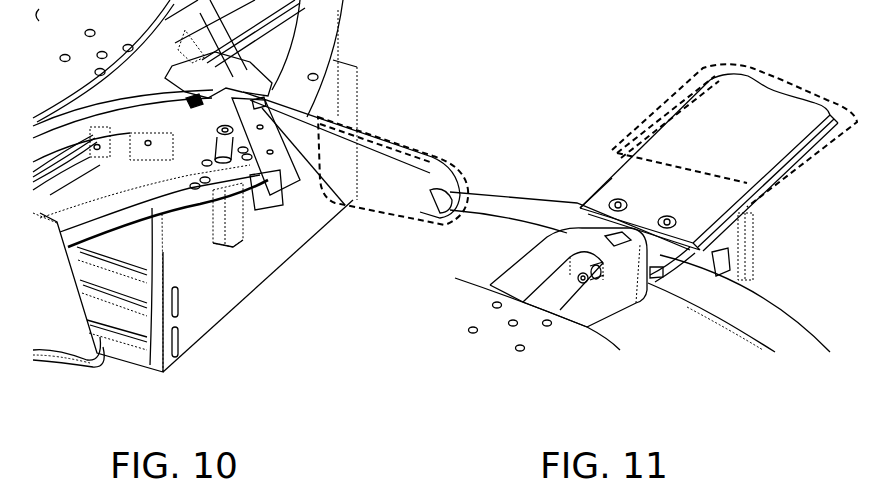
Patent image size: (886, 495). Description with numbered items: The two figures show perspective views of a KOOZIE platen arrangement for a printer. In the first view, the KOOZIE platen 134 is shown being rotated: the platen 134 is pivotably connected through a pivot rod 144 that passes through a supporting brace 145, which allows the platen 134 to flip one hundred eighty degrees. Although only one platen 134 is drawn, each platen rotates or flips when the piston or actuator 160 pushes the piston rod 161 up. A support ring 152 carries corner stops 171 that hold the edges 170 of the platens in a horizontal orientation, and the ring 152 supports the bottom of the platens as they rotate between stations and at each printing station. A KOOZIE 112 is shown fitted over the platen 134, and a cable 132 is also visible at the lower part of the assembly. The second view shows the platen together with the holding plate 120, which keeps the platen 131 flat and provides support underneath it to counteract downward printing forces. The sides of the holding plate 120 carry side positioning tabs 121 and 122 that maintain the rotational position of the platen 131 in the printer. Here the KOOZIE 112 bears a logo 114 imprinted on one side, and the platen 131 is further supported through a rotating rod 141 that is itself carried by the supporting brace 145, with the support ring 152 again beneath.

In FIG. 10, the KOOZIE 112 is at (385, 135).
In FIG. 11, the KOOZIE 112 is at (783, 78).
In FIG. 11, the logo 114 is at (710, 111).
In FIG. 11, the holding plate 120 is at (748, 232).
In FIG. 11, the side positioning tab 121 is at (750, 213).
In FIG. 11, the side positioning tab 122 is at (613, 168).
In FIG. 11, the platen 131 is at (667, 122).
In FIG. 10, the cable 132 is at (80, 362).
In FIG. 10, the KOOZIE platen 134 is at (407, 217).
In FIG. 11, the rotating rod 141 is at (617, 240).
In FIG. 10, the pivot rod 144 is at (197, 104).
In FIG. 10, the supporting brace 145 is at (233, 78).
In FIG. 11, the supporting brace 145 is at (520, 262).
In FIG. 10, the support ring 152 is at (337, 45).
In FIG. 11, the support ring 152 is at (773, 298).
In FIG. 10, the piston or actuator 160 is at (232, 243).
In FIG. 10, the piston rod 161 is at (213, 137).
In FIG. 10, the edges of the platens 170 is at (258, 103).
In FIG. 11, the edges of the platens 170 is at (703, 242).
In FIG. 10, the corner stops 171 is at (253, 145).
In FIG. 11, the corner stops 171 is at (713, 250).